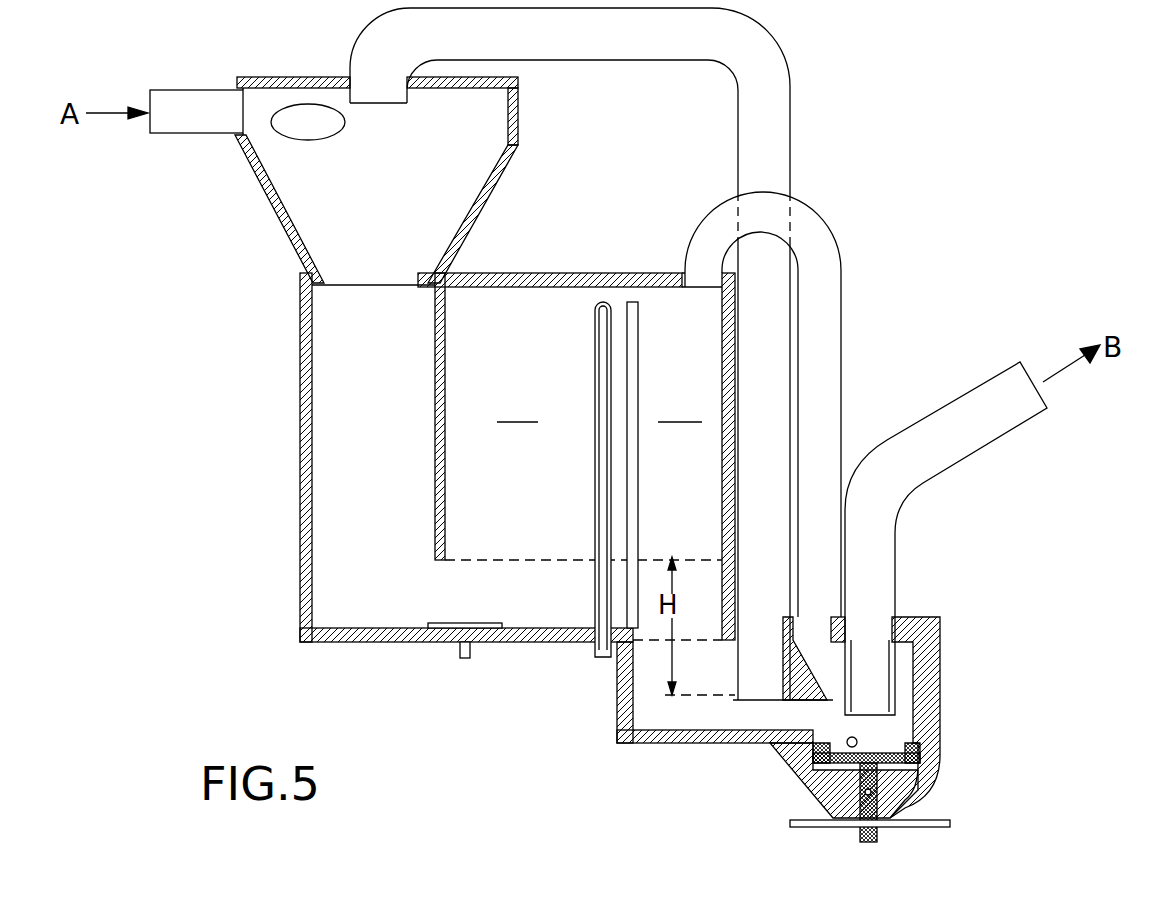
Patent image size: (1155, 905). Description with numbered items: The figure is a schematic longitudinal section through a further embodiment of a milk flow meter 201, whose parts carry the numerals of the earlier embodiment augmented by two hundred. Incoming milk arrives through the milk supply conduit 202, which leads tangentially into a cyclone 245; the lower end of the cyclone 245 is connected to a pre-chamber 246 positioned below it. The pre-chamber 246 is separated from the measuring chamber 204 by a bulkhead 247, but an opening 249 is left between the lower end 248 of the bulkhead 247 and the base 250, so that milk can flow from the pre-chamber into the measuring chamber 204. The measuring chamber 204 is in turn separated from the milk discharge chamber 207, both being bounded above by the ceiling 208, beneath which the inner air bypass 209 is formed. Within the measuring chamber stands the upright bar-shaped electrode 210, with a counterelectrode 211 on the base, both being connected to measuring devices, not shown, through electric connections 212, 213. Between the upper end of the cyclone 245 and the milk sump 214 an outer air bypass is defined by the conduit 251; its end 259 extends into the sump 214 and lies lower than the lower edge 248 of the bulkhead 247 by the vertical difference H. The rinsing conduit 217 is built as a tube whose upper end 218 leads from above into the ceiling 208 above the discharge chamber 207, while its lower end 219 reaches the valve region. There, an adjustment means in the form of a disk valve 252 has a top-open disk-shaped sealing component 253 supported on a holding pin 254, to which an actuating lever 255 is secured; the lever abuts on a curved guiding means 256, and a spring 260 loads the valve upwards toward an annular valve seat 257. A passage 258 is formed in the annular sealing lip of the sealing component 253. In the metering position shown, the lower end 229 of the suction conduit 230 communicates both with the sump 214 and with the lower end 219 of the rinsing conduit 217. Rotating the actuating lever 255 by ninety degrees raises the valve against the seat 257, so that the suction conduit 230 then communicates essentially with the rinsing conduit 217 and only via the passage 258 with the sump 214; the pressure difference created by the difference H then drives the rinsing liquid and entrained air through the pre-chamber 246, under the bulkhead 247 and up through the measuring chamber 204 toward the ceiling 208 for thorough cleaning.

The milk flow meter 201 is at (290, 368).
The milk supply conduit 202 is at (197, 116).
The measuring chamber 204 is at (517, 408).
The milk discharge chamber 207 is at (680, 408).
The ceiling 208 is at (530, 273).
The inner air bypass 209 is at (630, 298).
The bar-shaped electrode 210 is at (598, 458).
The counterelectrode 211 is at (485, 623).
The outlet 212 is at (597, 660).
The drain nozzle 213 is at (462, 660).
The milk sump 214 is at (623, 745).
The rinsing conduit 217 is at (812, 347).
The upper end of the rinsing conduit 218 is at (700, 282).
The lower end of the rinsing conduit 219 is at (945, 640).
The lower end of the suction conduit 229 is at (875, 703).
The suction conduit 230 is at (1010, 403).
The cyclone 245 is at (307, 173).
The pre-chamber 246 is at (352, 448).
The bulkhead 247 is at (437, 467).
The lower end of the bulkhead 248 is at (437, 576).
The opening 249 is at (437, 578).
The base 250 is at (413, 640).
The outer air bypass conduit 251 is at (772, 114).
The disk valve 252 is at (935, 748).
The disk-shaped sealing component 253 is at (807, 757).
The holding pin 254 is at (858, 833).
The actuating lever 255 is at (950, 823).
The curved guiding means 256 is at (925, 812).
The annular valve seat 257 is at (728, 745).
The passage 258 is at (807, 800).
The end of the outer air bypass 259 is at (653, 712).
The spring 260 is at (890, 822).